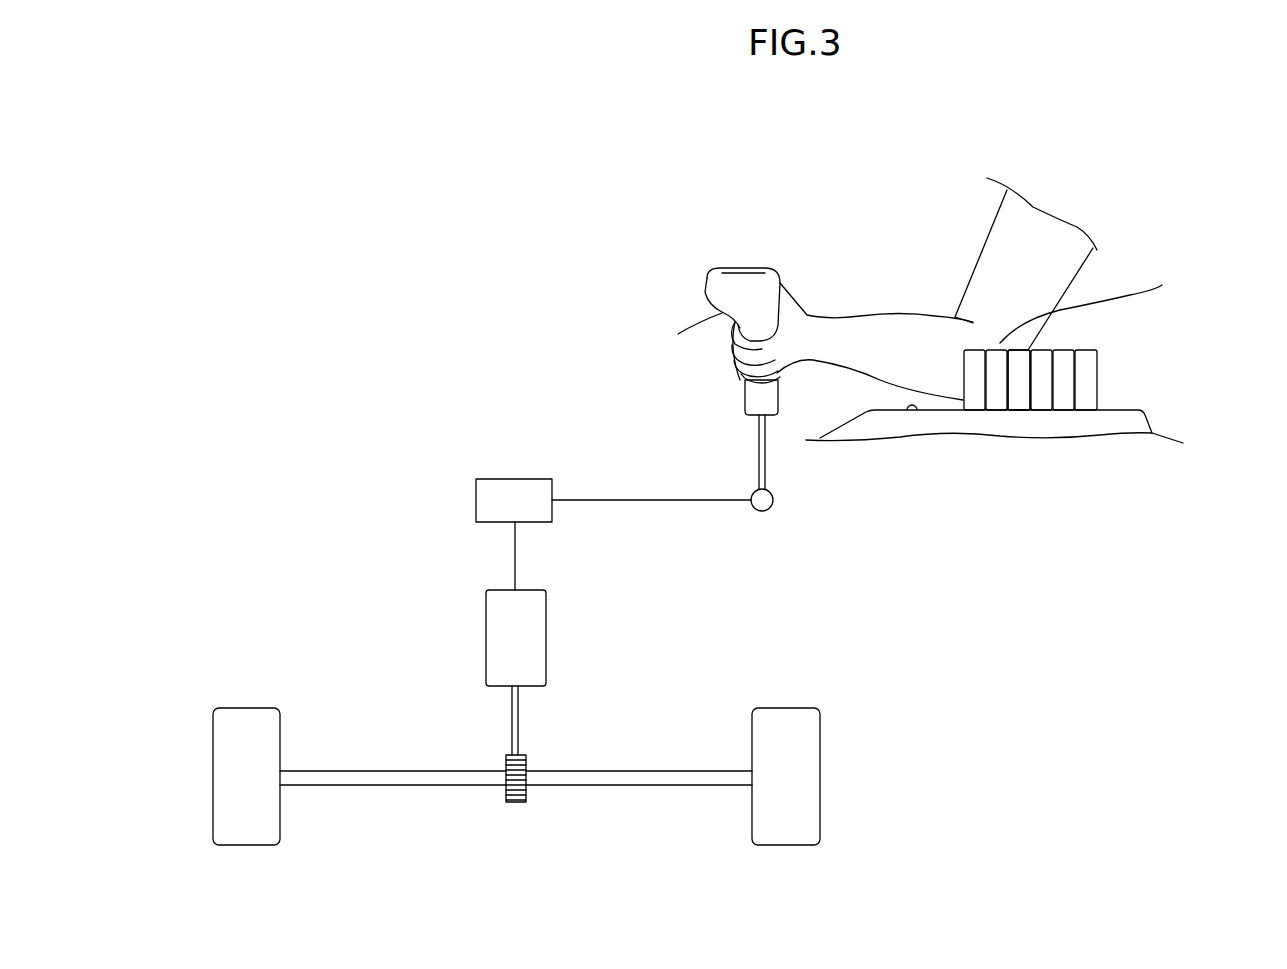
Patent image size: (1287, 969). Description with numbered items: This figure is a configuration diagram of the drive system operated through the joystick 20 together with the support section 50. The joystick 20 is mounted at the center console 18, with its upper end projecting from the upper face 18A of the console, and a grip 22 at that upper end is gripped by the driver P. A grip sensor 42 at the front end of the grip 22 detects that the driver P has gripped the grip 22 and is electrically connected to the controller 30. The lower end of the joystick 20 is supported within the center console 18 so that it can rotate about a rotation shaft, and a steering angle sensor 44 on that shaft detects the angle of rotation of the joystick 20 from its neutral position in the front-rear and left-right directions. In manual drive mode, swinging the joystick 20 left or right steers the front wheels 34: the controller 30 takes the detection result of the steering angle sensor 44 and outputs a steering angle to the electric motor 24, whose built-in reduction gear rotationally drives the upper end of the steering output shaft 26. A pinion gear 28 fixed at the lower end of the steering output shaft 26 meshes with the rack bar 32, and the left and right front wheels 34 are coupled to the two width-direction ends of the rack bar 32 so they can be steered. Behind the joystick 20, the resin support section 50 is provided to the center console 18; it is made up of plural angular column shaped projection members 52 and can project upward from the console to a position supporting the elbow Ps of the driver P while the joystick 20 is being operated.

The joystick 20 is at (716, 268).
The grip 22 is at (774, 294).
The grip sensor 42 is at (718, 318).
The driver P is at (970, 253).
The elbow Ps is at (1090, 300).
The support section 50 is at (1103, 373).
The center console 18 is at (1152, 420).
The upper face 18A is at (914, 414).
The projection members 52 is at (1020, 397).
The controller 30 is at (488, 498).
The steering angle sensor 44 is at (772, 508).
The electric motor 24 is at (546, 633).
The steering output shaft 26 is at (520, 727).
The pinion gear 28 is at (516, 803).
The rack bar 32 is at (362, 787).
The front wheels 34 is at (213, 775).